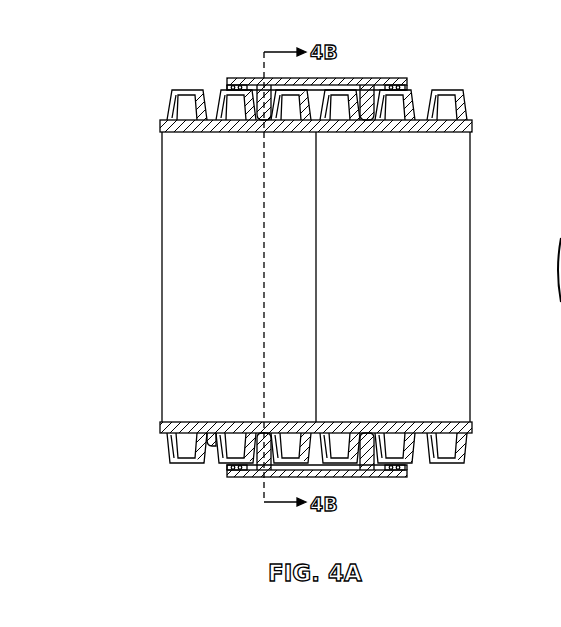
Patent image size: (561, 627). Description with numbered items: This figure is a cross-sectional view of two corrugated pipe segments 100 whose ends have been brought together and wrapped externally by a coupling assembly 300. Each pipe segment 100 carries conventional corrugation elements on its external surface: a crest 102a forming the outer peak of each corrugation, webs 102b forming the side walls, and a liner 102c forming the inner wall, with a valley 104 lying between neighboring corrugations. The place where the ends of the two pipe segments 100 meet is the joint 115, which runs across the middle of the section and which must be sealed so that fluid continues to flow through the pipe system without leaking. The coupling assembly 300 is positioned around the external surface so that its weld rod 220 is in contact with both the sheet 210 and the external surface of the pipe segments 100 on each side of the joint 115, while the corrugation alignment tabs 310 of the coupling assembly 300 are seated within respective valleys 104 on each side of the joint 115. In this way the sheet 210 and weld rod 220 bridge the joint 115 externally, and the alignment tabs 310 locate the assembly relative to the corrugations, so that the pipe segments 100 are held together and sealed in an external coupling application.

The corrugated pipe segment 100 is at (168, 110).
The crest 102a is at (190, 463).
The web 102b is at (168, 450).
The liner 102c is at (183, 428).
The valley 104 is at (212, 436).
The joint 115 is at (318, 232).
The sheet 210 is at (229, 81).
The weld rod 220 is at (228, 86).
The coupling assembly 300 is at (354, 70).
The corrugation alignment tab 310 is at (261, 86).